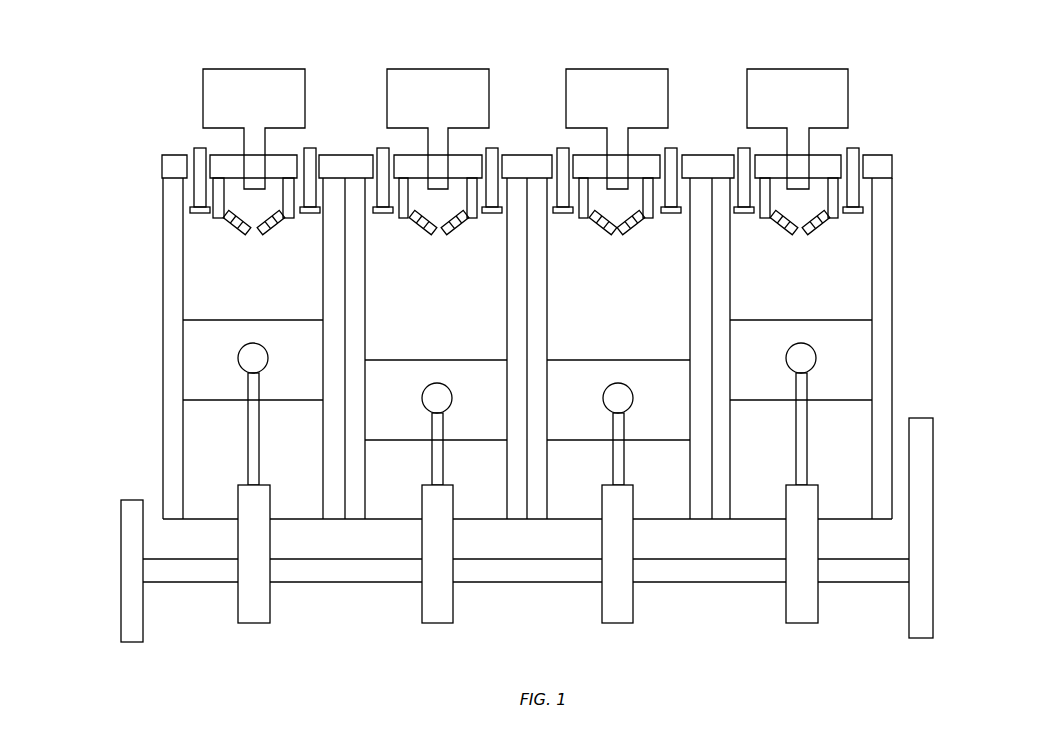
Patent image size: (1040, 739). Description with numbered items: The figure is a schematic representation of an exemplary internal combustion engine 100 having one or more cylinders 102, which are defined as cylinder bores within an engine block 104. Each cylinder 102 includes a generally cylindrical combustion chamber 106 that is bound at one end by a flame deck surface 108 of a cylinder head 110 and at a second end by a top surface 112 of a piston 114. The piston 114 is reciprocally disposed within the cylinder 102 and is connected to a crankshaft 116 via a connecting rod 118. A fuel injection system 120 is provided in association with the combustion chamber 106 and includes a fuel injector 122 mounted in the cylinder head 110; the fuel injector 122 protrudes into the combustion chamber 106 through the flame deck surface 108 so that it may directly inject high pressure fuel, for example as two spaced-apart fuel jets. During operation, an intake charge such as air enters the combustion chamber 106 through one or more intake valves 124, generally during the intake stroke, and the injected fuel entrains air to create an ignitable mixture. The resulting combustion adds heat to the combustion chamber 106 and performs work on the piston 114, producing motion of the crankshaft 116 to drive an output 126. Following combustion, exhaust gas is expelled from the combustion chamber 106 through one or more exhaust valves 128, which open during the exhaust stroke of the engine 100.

The engine 100 is at (955, 83).
The cylinder 102 is at (294, 486).
The engine block 104 is at (480, 291).
The combustion chamber 106 is at (529, 295).
The flame deck surface 108 is at (524, 176).
The cylinder head 110 is at (690, 154).
The top surface 112 is at (200, 316).
The piston 114 is at (527, 388).
The crankshaft 116 is at (729, 582).
The connecting rod 118 is at (248, 455).
The fuel injection system 120 is at (230, 233).
The fuel injector 122 is at (250, 190).
The intake valve 124 is at (198, 146).
The output 126 is at (933, 510).
The exhaust valve 128 is at (310, 146).